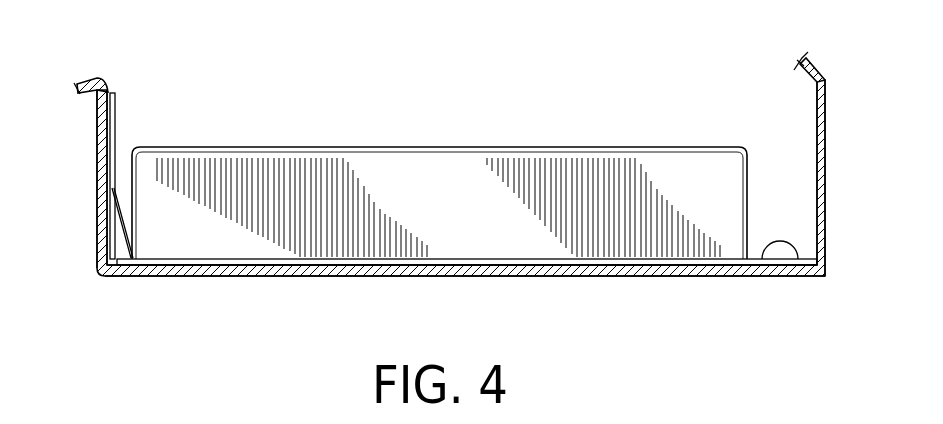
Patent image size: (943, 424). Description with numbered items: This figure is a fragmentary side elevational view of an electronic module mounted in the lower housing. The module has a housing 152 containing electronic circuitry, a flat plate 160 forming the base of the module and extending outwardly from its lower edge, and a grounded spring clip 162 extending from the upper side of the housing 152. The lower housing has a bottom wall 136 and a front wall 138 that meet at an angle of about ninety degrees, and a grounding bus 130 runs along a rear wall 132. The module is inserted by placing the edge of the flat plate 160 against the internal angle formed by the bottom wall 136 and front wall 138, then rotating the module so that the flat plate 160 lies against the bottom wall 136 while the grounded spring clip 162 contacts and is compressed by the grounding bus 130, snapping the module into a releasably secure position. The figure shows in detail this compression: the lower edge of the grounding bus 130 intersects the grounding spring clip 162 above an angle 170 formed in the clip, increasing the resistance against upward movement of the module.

The grounding bus 130 is at (108, 94).
The rear wall 132 is at (97, 160).
The bottom wall 136 is at (238, 277).
The front wall 138 is at (826, 178).
The housing 152 is at (688, 168).
The flat plate 160 is at (763, 259).
The grounded spring clip 162 is at (116, 120).
The angle 170 is at (112, 190).